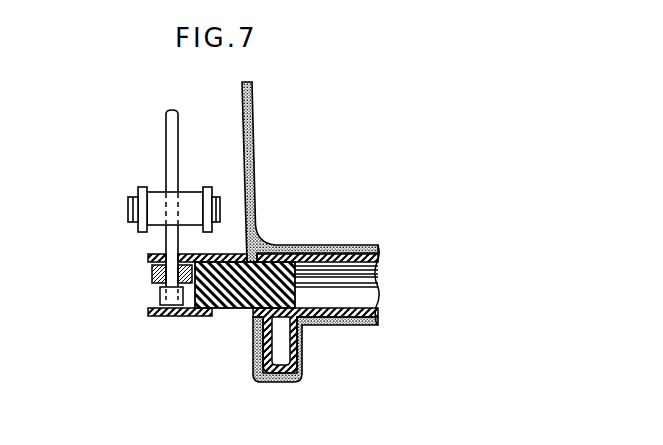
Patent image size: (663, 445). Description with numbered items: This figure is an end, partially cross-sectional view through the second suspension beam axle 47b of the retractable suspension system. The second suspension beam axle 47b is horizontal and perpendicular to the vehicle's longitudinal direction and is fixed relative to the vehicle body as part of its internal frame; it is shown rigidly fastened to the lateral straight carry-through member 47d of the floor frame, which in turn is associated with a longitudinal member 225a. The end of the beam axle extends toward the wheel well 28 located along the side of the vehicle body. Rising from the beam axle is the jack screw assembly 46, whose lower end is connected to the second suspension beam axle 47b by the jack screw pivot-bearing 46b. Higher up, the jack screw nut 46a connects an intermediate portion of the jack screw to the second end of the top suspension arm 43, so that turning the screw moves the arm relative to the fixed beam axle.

The wheel well 28 is at (253, 119).
The jack screw assembly 46 is at (167, 131).
The top suspension arm 43 is at (141, 188).
The jack screw nut 46a is at (158, 217).
The jack screw pivot-bearing 46b is at (152, 276).
The second suspension beam axle 47b is at (228, 293).
The lateral straight carry-through member 47d is at (327, 308).
The longitudinal member 225a is at (280, 359).